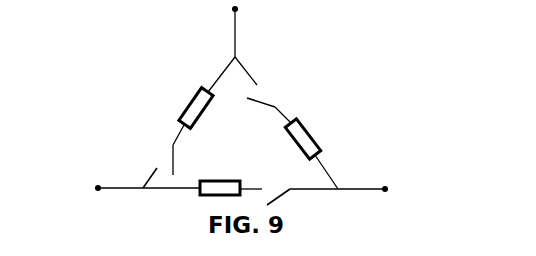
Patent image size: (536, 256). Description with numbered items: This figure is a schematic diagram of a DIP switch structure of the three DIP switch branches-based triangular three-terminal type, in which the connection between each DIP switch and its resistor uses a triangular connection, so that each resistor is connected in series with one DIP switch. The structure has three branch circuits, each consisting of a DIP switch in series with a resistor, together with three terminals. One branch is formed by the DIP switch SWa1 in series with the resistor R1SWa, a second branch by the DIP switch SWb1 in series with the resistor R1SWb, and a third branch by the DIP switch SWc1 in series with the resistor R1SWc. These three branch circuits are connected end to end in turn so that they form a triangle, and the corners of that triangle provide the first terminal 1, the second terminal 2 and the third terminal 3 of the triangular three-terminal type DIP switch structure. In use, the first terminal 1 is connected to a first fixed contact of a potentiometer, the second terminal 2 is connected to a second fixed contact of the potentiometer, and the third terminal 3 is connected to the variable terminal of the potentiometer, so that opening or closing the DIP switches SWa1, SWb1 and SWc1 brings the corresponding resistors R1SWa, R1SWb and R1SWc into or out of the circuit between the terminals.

The first terminal 1 is at (230, 31).
The second terminal 2 is at (91, 177).
The third terminal 3 is at (371, 178).
The DIP switch SWa1 is at (149, 156).
The DIP switch SWb1 is at (289, 187).
The DIP switch SWc1 is at (283, 93).
The resistor R1SWa is at (175, 101).
The resistor R1SWb is at (219, 172).
The resistor R1SWc is at (321, 145).